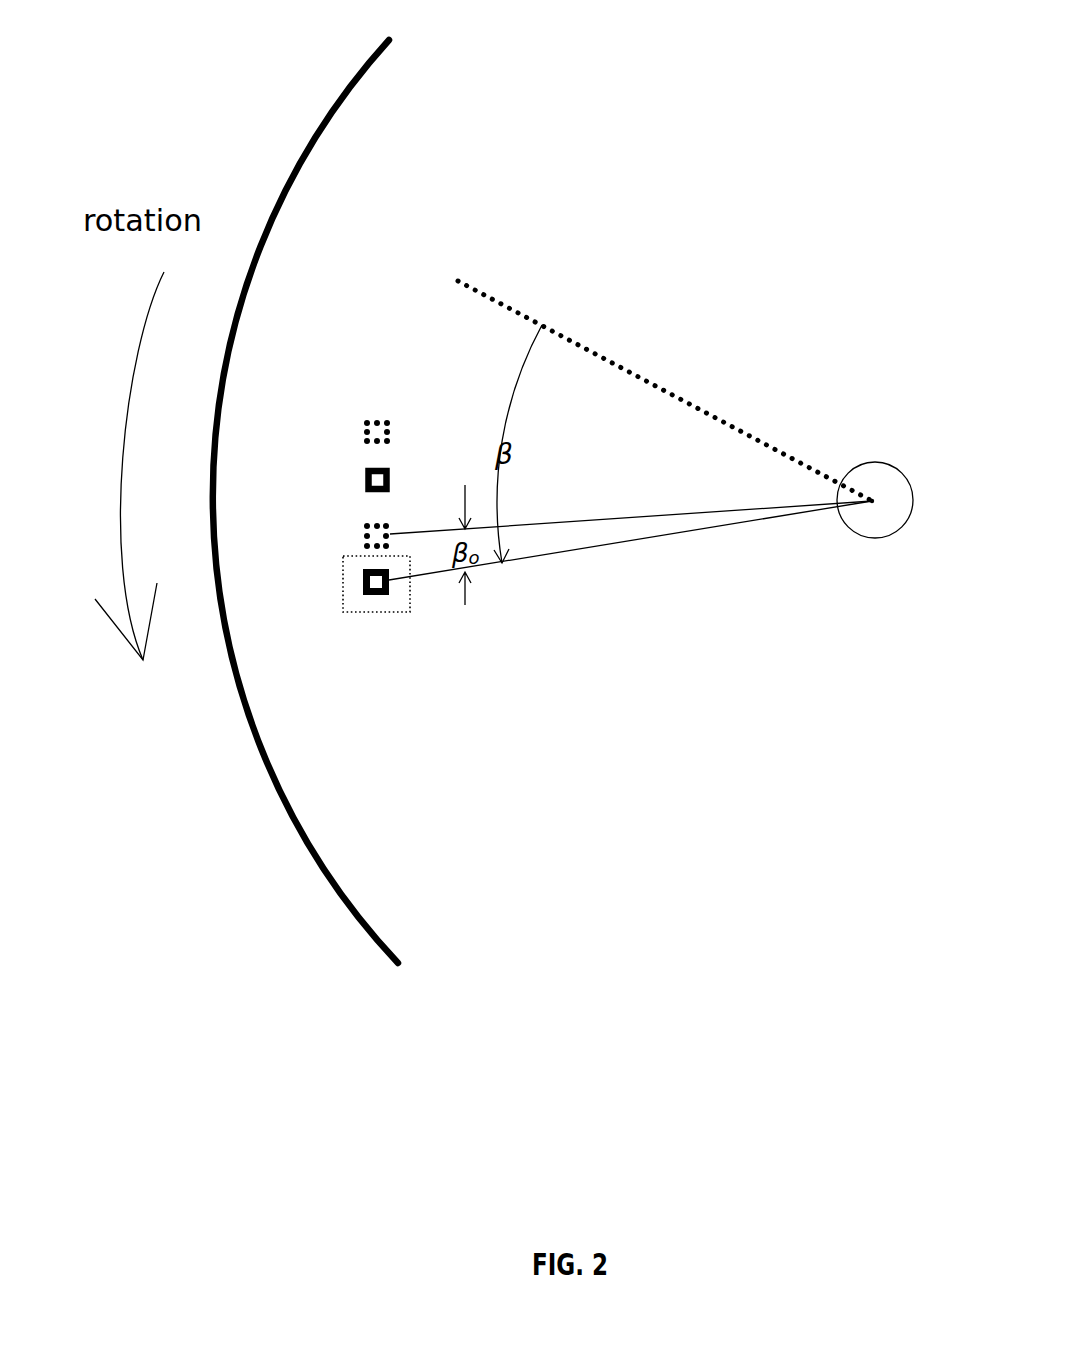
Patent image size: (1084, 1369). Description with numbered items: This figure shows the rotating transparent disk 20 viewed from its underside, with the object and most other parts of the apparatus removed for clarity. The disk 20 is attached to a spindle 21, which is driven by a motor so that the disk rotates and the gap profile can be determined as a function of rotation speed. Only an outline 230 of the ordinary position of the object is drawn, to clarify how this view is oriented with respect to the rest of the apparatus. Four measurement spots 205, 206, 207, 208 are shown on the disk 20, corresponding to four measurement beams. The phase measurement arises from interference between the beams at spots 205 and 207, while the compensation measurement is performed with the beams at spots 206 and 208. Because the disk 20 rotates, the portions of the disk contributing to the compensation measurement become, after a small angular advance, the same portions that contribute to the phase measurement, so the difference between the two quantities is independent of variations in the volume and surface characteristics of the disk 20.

The rotating transparent disk 20 is at (328, 117).
The spindle 21 is at (871, 519).
The measurement spot 205 is at (363, 432).
The measurement spot 206 is at (363, 480).
The measurement spot 207 is at (365, 536).
The measurement spot 208 is at (363, 580).
The outline of the ordinary position of the object 230 is at (382, 612).